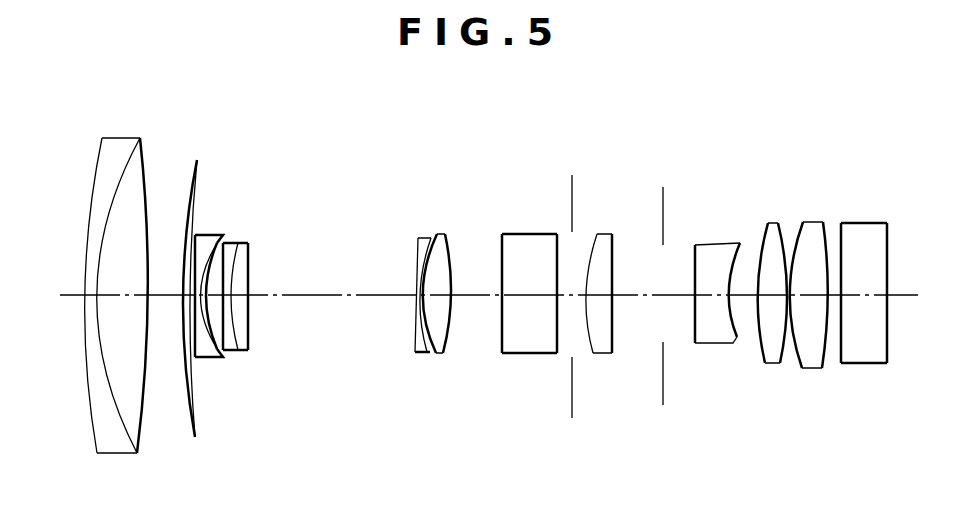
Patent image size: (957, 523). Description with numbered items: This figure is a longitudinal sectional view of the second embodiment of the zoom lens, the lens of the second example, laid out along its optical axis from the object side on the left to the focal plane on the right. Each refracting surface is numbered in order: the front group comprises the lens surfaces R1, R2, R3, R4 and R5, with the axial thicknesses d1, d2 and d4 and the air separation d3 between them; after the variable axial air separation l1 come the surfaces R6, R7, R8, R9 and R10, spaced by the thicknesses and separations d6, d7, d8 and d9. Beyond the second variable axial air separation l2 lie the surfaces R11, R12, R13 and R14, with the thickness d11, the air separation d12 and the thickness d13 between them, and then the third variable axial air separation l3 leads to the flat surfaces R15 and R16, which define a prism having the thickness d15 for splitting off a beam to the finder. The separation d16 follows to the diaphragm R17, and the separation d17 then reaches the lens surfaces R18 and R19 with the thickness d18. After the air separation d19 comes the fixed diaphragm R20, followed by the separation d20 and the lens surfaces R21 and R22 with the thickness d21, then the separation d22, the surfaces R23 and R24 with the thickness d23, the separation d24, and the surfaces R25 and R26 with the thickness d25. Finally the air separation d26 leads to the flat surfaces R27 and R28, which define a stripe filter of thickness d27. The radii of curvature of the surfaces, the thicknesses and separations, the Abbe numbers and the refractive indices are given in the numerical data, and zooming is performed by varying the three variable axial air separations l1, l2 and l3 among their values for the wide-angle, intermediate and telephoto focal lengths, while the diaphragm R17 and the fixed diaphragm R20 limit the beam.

The first lens surface R1 is at (73, 462).
The second lens surface R2 is at (107, 458).
The third lens surface R3 is at (150, 462).
The fourth lens surface R4 is at (180, 462).
The fifth lens surface R5 is at (209, 462).
The sixth lens surface R6 is at (203, 380).
The seventh lens surface R7 is at (222, 380).
The eighth lens surface R8 is at (242, 380).
The ninth lens surface R9 is at (263, 380).
The tenth lens surface R10 is at (284, 380).
The eleventh lens surface R11 is at (385, 380).
The twelfth lens surface R12 is at (410, 380).
The thirteenth lens surface R13 is at (430, 380).
The fourteenth lens surface R14 is at (451, 380).
The prism entrance surface R15 is at (487, 380).
The prism exit surface R16 is at (540, 380).
The diaphragm R17 is at (570, 448).
The eighteenth lens surface R18 is at (590, 383).
The nineteenth lens surface R19 is at (627, 383).
The fixed diaphragm R20 is at (662, 428).
The twenty-first lens surface R21 is at (686, 390).
The twenty-second lens surface R22 is at (718, 390).
The twenty-third lens surface R23 is at (750, 390).
The twenty-fourth lens surface R24 is at (782, 390).
The twenty-fifth lens surface R25 is at (801, 390).
The twenty-sixth lens surface R26 is at (825, 390).
The stripe filter entrance surface R27 is at (856, 390).
The stripe filter exit surface R28 is at (906, 390).
The axial thickness d1 is at (83, 293).
The axial thickness d2 is at (105, 293).
The axial air separation d3 is at (151, 240).
The axial thickness d4 is at (157, 293).
The axial thickness d6 is at (197, 284).
The axial air separation d7 is at (205, 287).
The axial thickness d8 is at (215, 290).
The axial thickness d9 is at (235, 293).
The axial thickness d11 is at (415, 292).
The axial air separation d12 is at (421, 292).
The axial thickness d13 is at (432, 292).
The axial thickness d15 is at (515, 293).
The axial air separation d16 is at (561, 293).
The axial air separation d17 is at (590, 293).
The axial thickness d18 is at (616, 293).
The axial air separation d19 is at (641, 293).
The axial air separation d20 is at (668, 293).
The axial thickness d21 is at (703, 293).
The axial air separation d22 is at (736, 293).
The axial thickness d23 is at (761, 293).
The axial air separation d24 is at (795, 293).
The axial thickness d25 is at (826, 292).
The axial air separation d26 is at (845, 293).
The axial thickness d27 is at (865, 293).
The variable axial air separation l1 is at (194, 236).
The variable axial air separation l2 is at (330, 293).
The variable axial air separation l3 is at (475, 293).